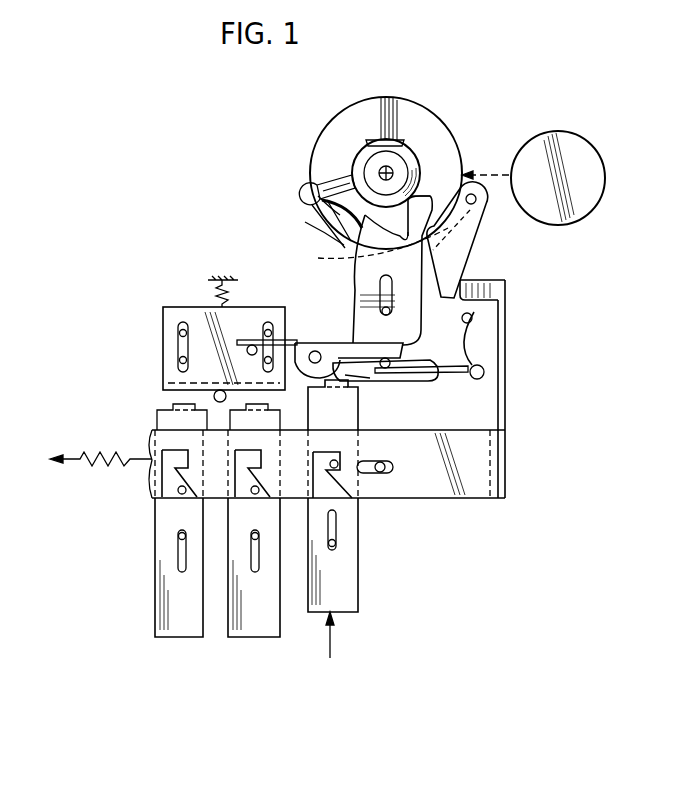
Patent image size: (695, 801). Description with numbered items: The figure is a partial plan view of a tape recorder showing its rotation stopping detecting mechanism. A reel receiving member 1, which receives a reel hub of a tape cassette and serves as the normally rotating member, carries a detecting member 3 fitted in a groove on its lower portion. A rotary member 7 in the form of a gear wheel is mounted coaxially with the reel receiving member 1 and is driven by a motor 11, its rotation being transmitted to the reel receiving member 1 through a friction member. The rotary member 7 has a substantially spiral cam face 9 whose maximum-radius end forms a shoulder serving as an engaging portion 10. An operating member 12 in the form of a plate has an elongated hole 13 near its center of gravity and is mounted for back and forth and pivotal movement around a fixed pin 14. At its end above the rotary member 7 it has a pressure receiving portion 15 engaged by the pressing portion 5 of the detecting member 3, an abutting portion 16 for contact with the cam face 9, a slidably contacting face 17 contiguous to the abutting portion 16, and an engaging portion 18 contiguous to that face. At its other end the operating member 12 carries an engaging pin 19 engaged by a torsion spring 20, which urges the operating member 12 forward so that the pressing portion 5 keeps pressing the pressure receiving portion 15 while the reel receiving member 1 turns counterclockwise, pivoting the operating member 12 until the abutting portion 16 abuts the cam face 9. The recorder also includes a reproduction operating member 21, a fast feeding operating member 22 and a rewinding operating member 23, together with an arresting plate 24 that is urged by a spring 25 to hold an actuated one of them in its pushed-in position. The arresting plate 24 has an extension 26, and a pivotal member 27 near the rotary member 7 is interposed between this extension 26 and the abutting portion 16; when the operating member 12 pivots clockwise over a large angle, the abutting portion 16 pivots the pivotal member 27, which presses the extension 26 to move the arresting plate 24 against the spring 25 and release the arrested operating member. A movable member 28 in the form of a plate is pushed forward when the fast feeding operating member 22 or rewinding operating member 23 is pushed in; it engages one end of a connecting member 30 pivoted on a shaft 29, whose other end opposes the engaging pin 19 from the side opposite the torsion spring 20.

The reel receiving member 1 is at (400, 160).
The detecting member 3 is at (368, 145).
The pressing portion 5 is at (330, 185).
The rotary member 7 is at (388, 96).
The cam face 9 is at (310, 214).
The engaging portion 10 is at (478, 278).
The motor 11 is at (558, 131).
The operating member 12 is at (356, 292).
The elongated hole 13 is at (365, 270).
The fixed pin 14 is at (352, 327).
The pressure receiving portion 15 is at (322, 196).
The abutting portion 16 is at (410, 206).
The slidably contacting face 17 is at (399, 287).
The engaging portion 18 is at (330, 225).
The engaging pin 19 is at (420, 378).
The torsion spring 20 is at (480, 326).
The reproduction operating member 21 is at (358, 576).
The fast feeding operating member 22 is at (250, 640).
The rewinding operating member 23 is at (172, 640).
The arresting plate 24 is at (430, 500).
The spring 25 is at (100, 455).
The extension 26 is at (508, 352).
The pivotal member 27 is at (470, 240).
The movable member 28 is at (163, 344).
The shaft 29 is at (345, 376).
The connecting member 30 is at (300, 340).